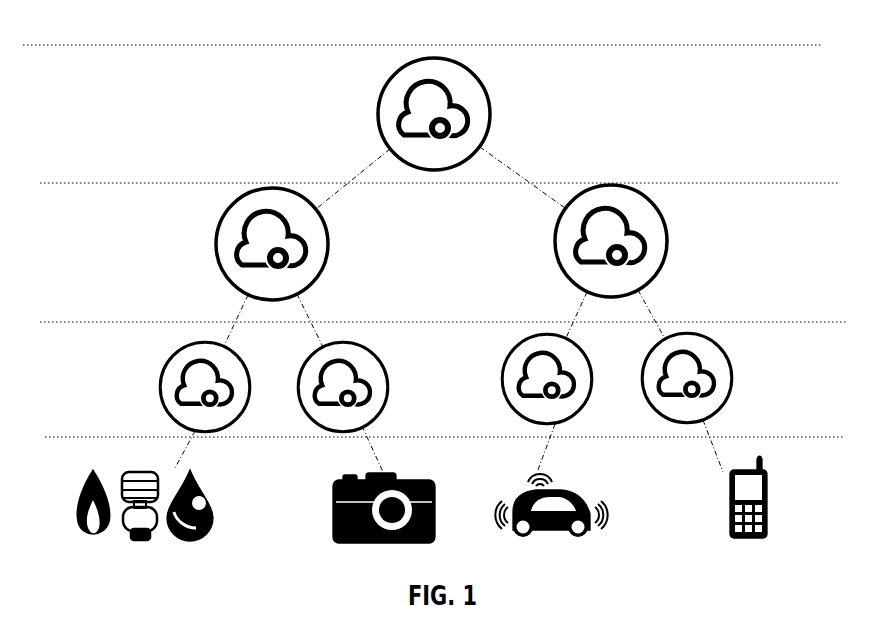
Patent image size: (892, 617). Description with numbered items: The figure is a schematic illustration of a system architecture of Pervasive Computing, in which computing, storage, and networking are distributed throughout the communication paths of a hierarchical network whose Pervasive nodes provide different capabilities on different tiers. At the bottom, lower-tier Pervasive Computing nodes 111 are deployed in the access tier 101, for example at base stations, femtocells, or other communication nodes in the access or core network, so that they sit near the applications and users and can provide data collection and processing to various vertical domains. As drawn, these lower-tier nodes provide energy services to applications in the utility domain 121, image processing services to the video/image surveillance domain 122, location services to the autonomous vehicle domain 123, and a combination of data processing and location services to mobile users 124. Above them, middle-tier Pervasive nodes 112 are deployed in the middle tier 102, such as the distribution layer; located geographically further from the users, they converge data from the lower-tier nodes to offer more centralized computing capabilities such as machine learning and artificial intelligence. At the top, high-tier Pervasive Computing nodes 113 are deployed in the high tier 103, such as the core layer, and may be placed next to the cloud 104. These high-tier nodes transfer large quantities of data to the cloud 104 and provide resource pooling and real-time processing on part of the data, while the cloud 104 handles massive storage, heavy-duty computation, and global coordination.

The access tier 101 is at (445, 403).
The middle tier 102 is at (443, 269).
The high tier 103 is at (439, 131).
The cloud 104 is at (434, 58).
The lower-tier Pervasive Computing nodes 111 is at (501, 387).
The middle-tier Pervasive nodes 112 is at (555, 247).
The high-tier Pervasive Computing nodes 113 is at (492, 97).
The utility domain 121 is at (145, 520).
The video/image surveillance domain 122 is at (384, 522).
The autonomous vehicle domain 123 is at (551, 522).
The mobile users 124 is at (748, 514).